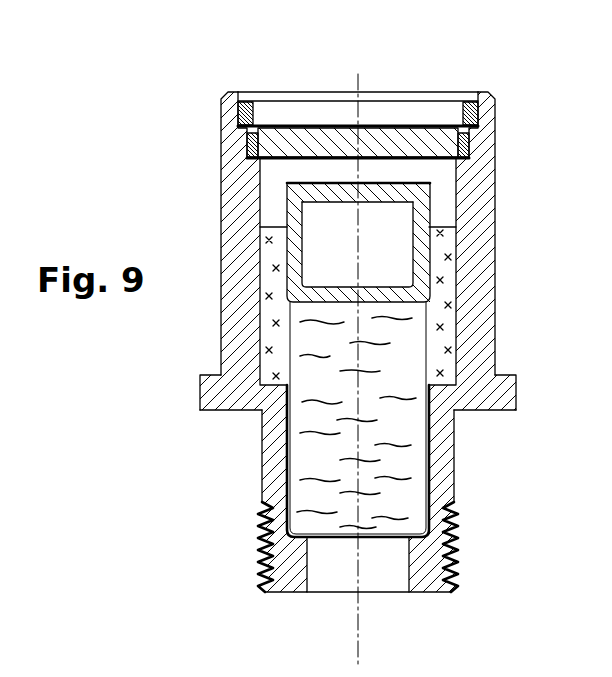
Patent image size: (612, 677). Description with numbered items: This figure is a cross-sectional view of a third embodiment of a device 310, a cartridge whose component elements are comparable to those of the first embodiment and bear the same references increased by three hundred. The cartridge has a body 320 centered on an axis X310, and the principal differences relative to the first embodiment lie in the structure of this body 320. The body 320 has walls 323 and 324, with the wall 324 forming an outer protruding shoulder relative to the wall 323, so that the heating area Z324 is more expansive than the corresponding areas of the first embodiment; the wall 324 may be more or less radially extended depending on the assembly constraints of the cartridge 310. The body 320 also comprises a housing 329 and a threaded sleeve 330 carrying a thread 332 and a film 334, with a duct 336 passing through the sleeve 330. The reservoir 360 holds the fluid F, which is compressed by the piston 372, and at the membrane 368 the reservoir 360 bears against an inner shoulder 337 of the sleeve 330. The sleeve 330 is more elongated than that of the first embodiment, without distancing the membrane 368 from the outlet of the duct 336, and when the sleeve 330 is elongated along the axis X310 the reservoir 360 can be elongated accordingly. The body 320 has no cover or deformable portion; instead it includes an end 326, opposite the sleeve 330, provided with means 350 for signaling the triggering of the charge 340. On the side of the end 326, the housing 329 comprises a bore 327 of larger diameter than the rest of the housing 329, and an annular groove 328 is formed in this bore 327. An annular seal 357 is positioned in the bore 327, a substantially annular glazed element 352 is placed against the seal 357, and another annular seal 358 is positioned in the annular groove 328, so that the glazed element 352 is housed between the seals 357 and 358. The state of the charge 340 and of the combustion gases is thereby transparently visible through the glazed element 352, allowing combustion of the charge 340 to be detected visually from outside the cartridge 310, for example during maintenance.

The device 310 is at (165, 146).
The axis X310 is at (358, 357).
The body 320 is at (473, 356).
The wall 323 is at (474, 288).
The wall 324 is at (490, 401).
The heating area Z324 is at (223, 412).
The end 326 is at (410, 90).
The bore 327 is at (474, 157).
The annular groove 328 is at (480, 117).
The housing 329 is at (442, 202).
The threaded sleeve 330 is at (430, 583).
The thread 332 is at (464, 567).
The film 334 is at (449, 538).
The duct 336 is at (380, 564).
The inner shoulder 337 is at (304, 531).
The charge 340 is at (282, 336).
The means for signaling 350 is at (479, 62).
The glazed element 352 is at (292, 145).
The annular seal 357 is at (468, 138).
The annular seal 358 is at (473, 101).
The reservoir 360 is at (431, 340).
The membrane 368 is at (392, 534).
The piston 372 is at (297, 253).
The fluid F is at (313, 433).